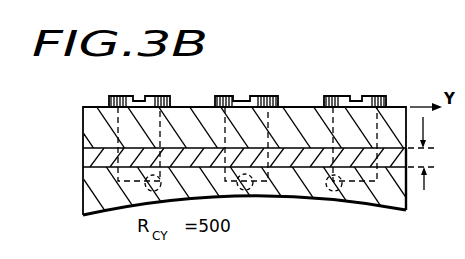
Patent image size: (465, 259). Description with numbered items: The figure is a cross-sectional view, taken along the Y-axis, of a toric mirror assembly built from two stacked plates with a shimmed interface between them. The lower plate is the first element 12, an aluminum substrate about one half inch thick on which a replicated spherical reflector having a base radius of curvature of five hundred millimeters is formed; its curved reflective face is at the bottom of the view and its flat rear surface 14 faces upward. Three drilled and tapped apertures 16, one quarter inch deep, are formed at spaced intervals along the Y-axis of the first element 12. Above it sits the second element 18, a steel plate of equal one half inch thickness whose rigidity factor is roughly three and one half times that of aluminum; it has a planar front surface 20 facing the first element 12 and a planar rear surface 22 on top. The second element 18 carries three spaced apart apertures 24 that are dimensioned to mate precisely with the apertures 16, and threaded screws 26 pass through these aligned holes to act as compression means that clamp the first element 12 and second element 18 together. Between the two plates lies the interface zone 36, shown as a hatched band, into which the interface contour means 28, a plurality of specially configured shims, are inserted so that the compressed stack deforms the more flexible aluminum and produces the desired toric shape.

The first element 12 is at (83, 181).
The rear surface 14 is at (322, 196).
The apertures 16 is at (166, 187).
The second element 18 is at (83, 118).
The planar front surface 20 is at (211, 140).
The planar rear surface 22 is at (182, 107).
The apertures 24 is at (110, 136).
The threaded screws 26 is at (124, 96).
The interface contour means 28 is at (74, 158).
The interface zone 36 is at (424, 190).